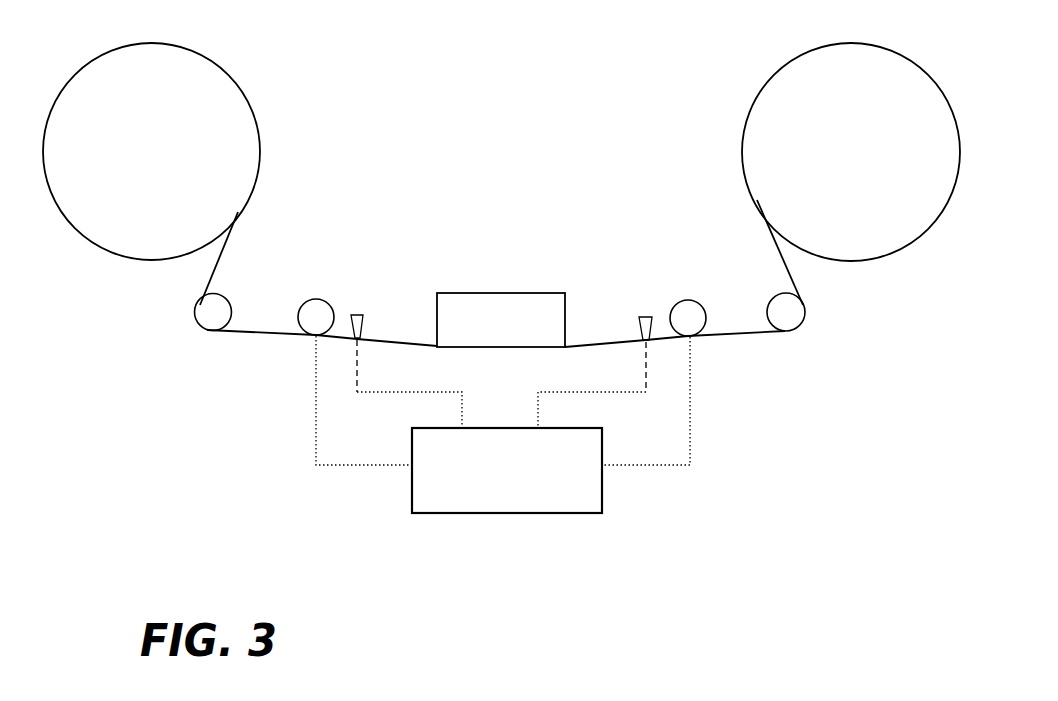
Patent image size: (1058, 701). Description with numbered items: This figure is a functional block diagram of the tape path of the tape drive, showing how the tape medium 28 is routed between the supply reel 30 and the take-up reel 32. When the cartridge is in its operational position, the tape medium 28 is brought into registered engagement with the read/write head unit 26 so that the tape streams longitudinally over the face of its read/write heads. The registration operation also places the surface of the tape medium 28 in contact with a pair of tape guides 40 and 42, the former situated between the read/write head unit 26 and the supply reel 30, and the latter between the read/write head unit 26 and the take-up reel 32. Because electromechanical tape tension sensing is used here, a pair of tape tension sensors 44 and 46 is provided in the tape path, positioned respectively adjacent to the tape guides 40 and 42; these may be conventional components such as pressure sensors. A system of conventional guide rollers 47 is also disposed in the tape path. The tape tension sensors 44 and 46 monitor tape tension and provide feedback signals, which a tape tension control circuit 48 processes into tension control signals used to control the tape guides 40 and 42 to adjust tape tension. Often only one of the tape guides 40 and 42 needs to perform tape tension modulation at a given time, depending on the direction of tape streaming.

The read/write head unit 26 is at (495, 292).
The tape medium 28 is at (157, 293).
The supply reel 30 is at (222, 67).
The take-up reel 32 is at (775, 72).
The tape guide 40 is at (317, 300).
The tape guide 42 is at (678, 302).
The tape tension sensor 44 is at (358, 315).
The tape tension sensor 46 is at (644, 317).
The guide rollers 47 is at (227, 292).
The tape tension control circuit 48 is at (500, 513).